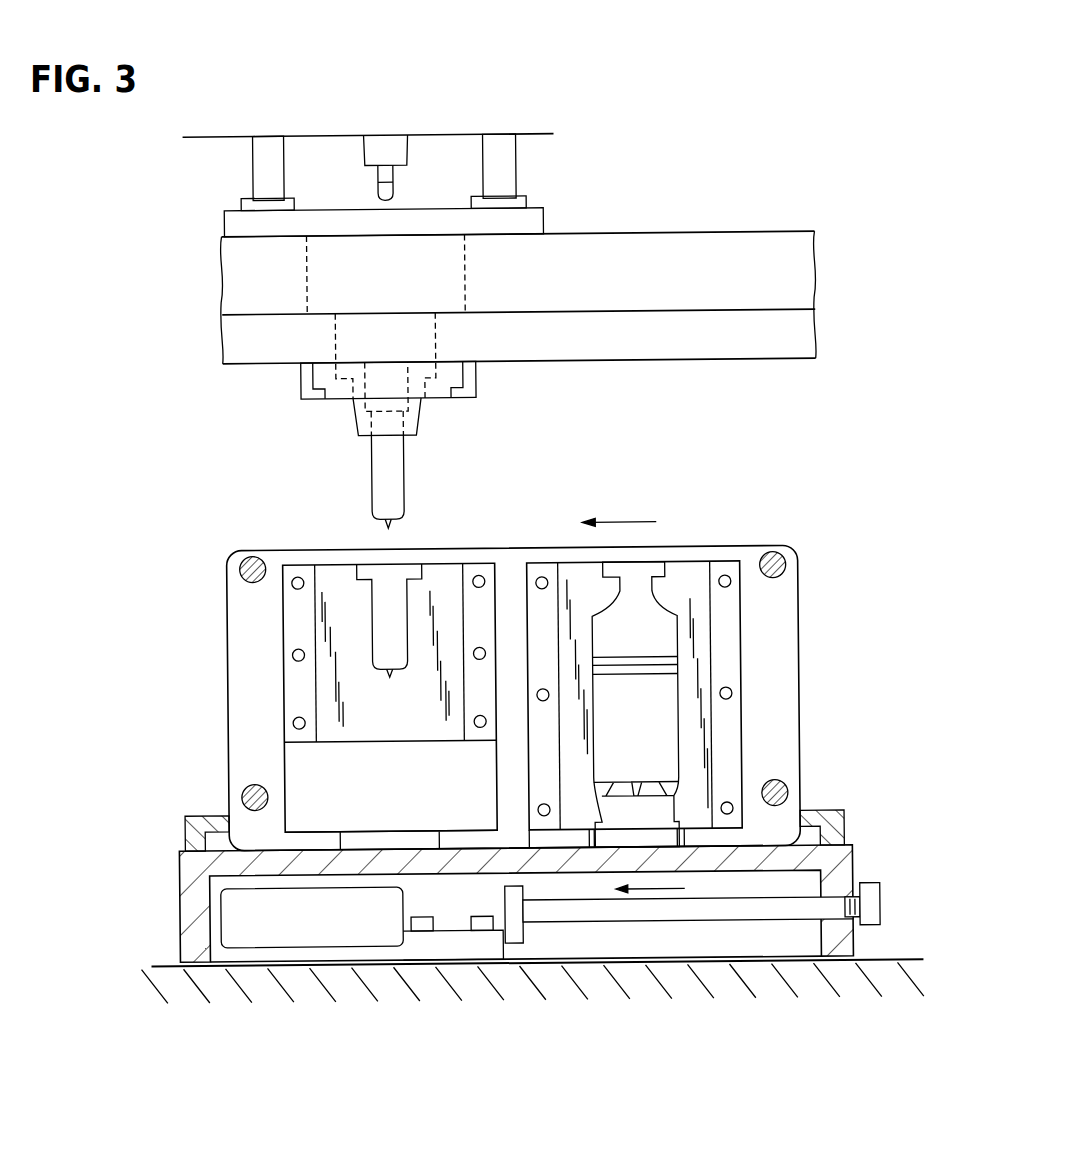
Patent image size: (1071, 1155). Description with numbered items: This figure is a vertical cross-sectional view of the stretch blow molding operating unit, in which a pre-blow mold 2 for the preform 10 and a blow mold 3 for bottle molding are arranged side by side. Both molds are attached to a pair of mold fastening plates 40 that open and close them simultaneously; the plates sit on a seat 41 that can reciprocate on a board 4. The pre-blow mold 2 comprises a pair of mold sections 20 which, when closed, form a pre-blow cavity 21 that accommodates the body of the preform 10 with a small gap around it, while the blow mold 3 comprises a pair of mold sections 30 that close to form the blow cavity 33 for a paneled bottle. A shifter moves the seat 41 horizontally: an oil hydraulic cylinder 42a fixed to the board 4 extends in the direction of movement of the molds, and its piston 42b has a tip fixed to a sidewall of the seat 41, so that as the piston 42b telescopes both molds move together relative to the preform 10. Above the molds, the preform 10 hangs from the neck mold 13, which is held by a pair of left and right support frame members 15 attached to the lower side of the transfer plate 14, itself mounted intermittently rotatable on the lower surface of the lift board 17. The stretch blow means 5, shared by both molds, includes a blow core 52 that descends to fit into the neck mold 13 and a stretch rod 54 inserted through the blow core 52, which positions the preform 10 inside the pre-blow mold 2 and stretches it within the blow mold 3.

The pre-blow mold 2 is at (265, 609).
The blow mold 3 is at (718, 610).
The board 4 is at (478, 985).
The stretch blow means 5 is at (250, 160).
The preform 10 is at (383, 472).
The neck mold 13 is at (363, 418).
The transfer plate 14 is at (678, 344).
The support frame members 15 is at (455, 377).
The lift board 17 is at (723, 234).
The mold sections 20 is at (342, 626).
The pre-blow cavity 21 is at (392, 644).
The mold sections 30 is at (695, 639).
The blow cavity 33 is at (662, 706).
The mold fastening plates 40 is at (780, 744).
The seat 41 is at (166, 879).
The oil hydraulic cylinder 42a is at (332, 925).
The piston 42b is at (670, 914).
The blow core 52 is at (400, 149).
The stretch rod 54 is at (385, 167).